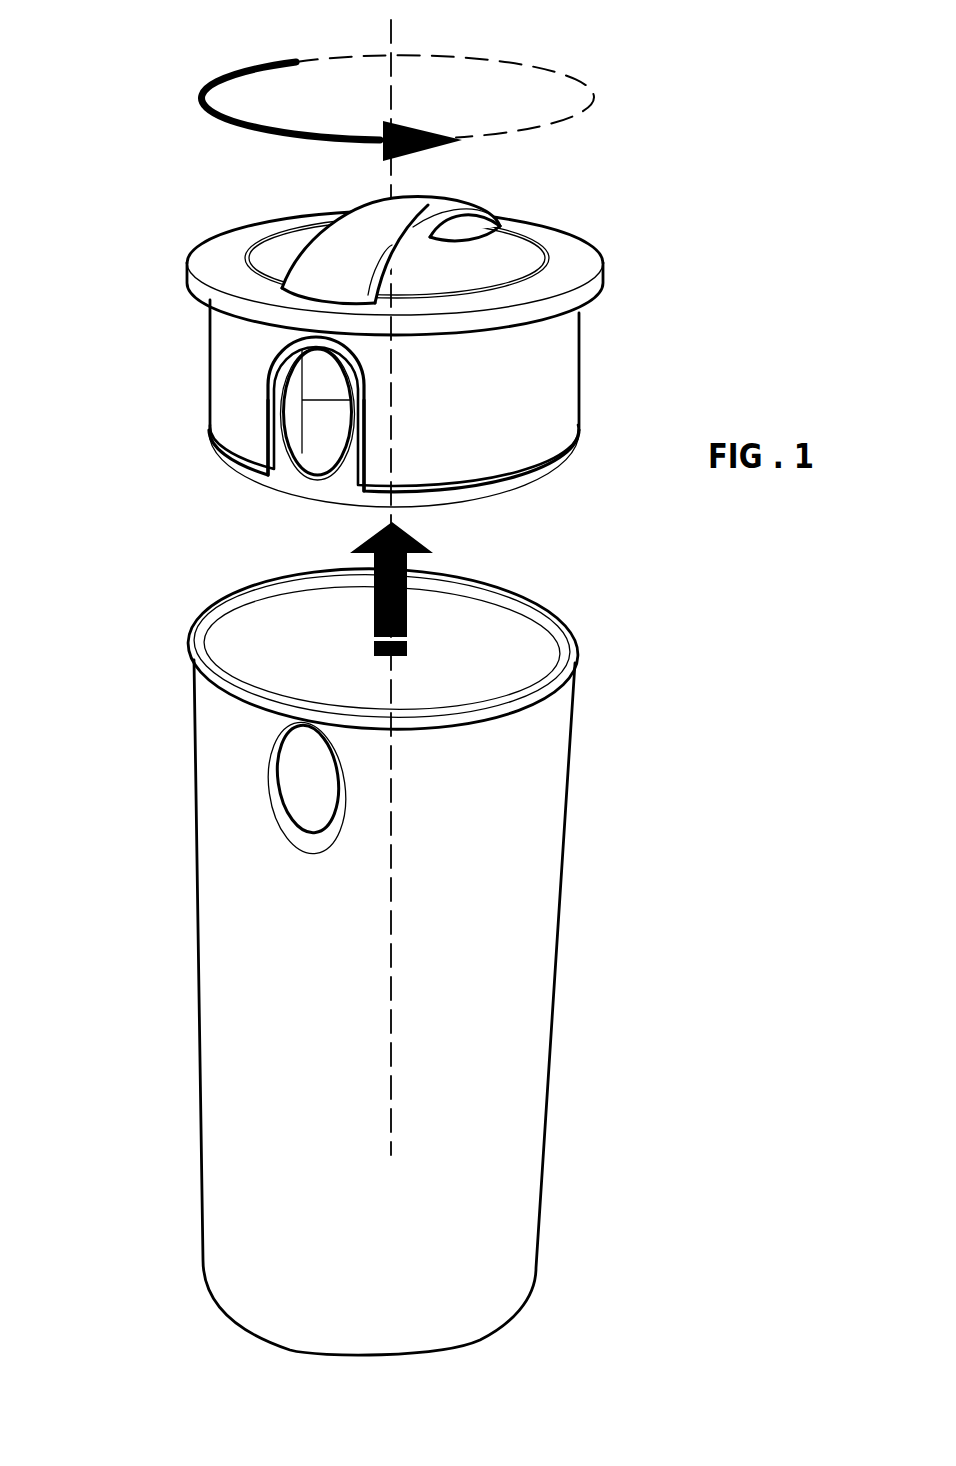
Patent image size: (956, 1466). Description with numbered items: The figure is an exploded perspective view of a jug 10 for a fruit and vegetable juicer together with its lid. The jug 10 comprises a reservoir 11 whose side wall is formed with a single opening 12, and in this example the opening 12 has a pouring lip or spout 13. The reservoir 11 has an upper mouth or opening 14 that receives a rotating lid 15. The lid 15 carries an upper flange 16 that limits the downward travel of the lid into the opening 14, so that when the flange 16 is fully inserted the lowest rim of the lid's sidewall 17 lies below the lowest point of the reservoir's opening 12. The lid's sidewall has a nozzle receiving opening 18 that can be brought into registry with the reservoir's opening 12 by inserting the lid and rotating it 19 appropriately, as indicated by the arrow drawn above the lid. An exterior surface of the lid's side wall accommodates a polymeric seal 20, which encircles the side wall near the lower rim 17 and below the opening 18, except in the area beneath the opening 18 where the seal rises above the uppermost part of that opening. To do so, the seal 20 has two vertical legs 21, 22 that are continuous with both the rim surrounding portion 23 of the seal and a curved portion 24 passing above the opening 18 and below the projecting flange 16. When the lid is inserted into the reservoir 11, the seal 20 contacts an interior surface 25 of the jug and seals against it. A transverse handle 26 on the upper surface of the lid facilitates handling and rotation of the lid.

The jug 10 is at (693, 182).
The reservoir 11 is at (523, 820).
The opening 12 is at (260, 797).
The pouring lip or spout 13 is at (273, 830).
The upper mouth or opening 14 is at (578, 624).
The rotating lid 15 is at (535, 388).
The upper flange 16 is at (606, 278).
The lowest rim of the lid's sidewall 17 is at (230, 478).
The nozzle receiving opening 18 is at (330, 415).
The rotating 19 is at (232, 70).
The polymeric seal 20 is at (520, 462).
The vertical leg 21 is at (267, 407).
The vertical leg 22 is at (367, 418).
The rim surrounding portion 23 is at (557, 463).
The curved portion 24 is at (302, 347).
The interior surface 25 is at (260, 637).
The transverse handle 26 is at (428, 200).